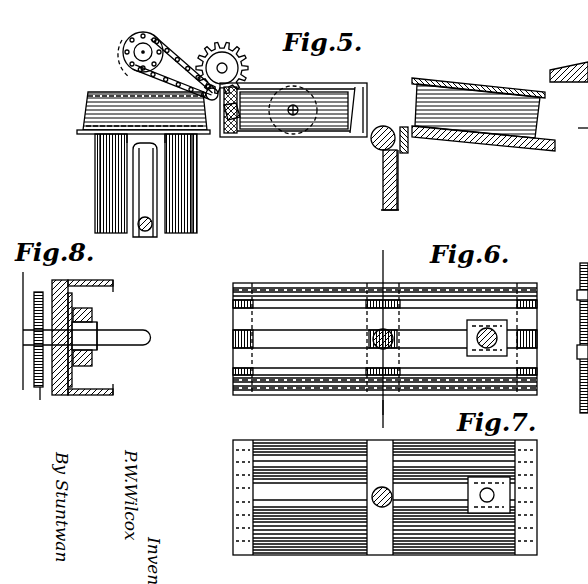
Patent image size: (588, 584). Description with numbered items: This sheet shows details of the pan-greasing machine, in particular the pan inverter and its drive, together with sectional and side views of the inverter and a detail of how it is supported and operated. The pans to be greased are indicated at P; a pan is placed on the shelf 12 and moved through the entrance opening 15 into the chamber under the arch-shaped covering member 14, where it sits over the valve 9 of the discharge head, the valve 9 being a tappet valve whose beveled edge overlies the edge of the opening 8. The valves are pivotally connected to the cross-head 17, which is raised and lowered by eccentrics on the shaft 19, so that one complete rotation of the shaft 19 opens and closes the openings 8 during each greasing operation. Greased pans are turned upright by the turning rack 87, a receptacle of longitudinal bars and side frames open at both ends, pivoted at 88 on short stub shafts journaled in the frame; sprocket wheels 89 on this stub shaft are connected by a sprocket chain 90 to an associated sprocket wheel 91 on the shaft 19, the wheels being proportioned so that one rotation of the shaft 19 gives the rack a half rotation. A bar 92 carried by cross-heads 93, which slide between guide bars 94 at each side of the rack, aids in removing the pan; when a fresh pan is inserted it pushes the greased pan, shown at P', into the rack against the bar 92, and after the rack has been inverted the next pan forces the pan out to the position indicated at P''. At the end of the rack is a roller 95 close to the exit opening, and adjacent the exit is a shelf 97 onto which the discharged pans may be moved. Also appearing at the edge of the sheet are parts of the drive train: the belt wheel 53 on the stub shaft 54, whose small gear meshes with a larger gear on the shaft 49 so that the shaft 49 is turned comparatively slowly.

In FIG. 5, the sprocket wheel 91 is at (153, 38).
In FIG. 5, the sprocket chain 90 is at (178, 60).
In FIG. 5, the shaft 19 is at (140, 52).
In FIG. 5, the pan P is at (139, 98).
In FIG. 5, the valve 9 is at (122, 140).
In FIG. 5, the openings 8 is at (178, 192).
In FIG. 6, the openings 8 is at (387, 332).
In FIG. 7, the openings 8 is at (392, 414).
In FIG. 5, the arch-shaped covering member 14 is at (196, 195).
In FIG. 5, the cross-head 17 is at (150, 229).
In FIG. 5, the turning rack 87 is at (274, 84).
In FIG. 8, the turning rack 87 is at (108, 282).
In FIG. 6, the turning rack 87 is at (296, 285).
In FIG. 7, the turning rack 87 is at (315, 447).
In FIG. 5, the greased pan P' is at (347, 74).
In FIG. 5, the bar 92 is at (236, 136).
In FIG. 8, the bar 92 is at (150, 335).
In FIG. 6, the bar 92 is at (492, 346).
In FIG. 7, the bar 92 is at (494, 492).
In FIG. 5, the roller 95 is at (387, 126).
In FIG. 5, the discharged pan P'' is at (478, 96).
In FIG. 5, the shelf 97 is at (505, 145).
In FIG. 5, the shelf 12 is at (556, 70).
In FIG. 5, the entrance opening 15 is at (587, 40).
In FIG. 8, the sprocket wheels 89 is at (37, 347).
In FIG. 8, the guide bars 94 is at (93, 314).
In FIG. 6, the guide bars 94 is at (331, 320).
In FIG. 7, the guide bars 94 is at (285, 478).
In FIG. 8, the cross-heads 93 is at (98, 328).
In FIG. 6, the cross-heads 93 is at (500, 338).
In FIG. 7, the cross-heads 93 is at (512, 499).
In FIG. 8, the pivot (stub shafts) 88 is at (72, 372).
In FIG. 6, the pivot (stub shafts) 88 is at (394, 340).
In FIG. 7, the pivot (stub shafts) 88 is at (385, 508).
In FIG. 6, the shaft 49 is at (580, 350).
In FIG. 6, the belt wheel 53 is at (584, 262).
In FIG. 6, the stub shaft 54 is at (578, 297).